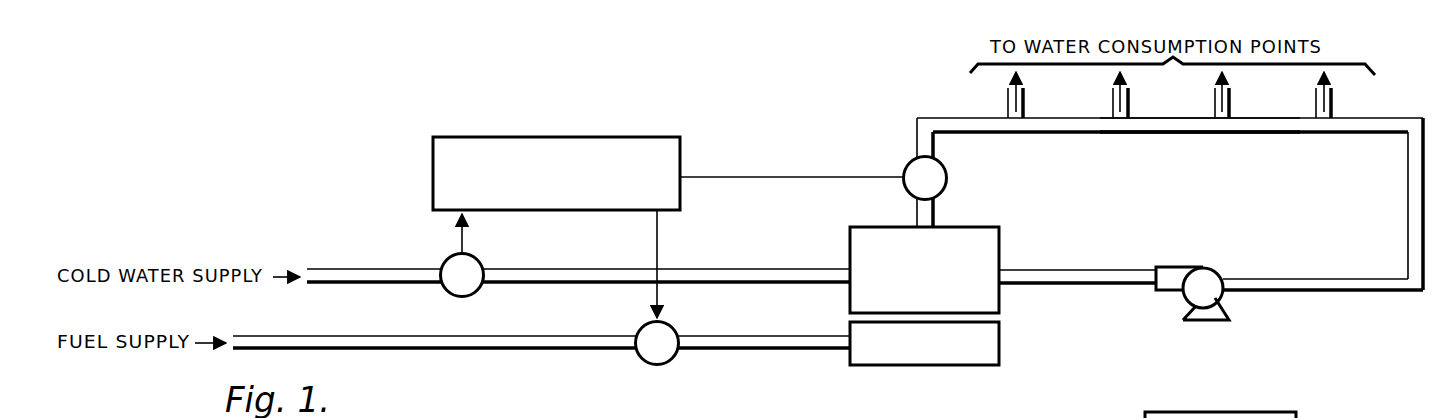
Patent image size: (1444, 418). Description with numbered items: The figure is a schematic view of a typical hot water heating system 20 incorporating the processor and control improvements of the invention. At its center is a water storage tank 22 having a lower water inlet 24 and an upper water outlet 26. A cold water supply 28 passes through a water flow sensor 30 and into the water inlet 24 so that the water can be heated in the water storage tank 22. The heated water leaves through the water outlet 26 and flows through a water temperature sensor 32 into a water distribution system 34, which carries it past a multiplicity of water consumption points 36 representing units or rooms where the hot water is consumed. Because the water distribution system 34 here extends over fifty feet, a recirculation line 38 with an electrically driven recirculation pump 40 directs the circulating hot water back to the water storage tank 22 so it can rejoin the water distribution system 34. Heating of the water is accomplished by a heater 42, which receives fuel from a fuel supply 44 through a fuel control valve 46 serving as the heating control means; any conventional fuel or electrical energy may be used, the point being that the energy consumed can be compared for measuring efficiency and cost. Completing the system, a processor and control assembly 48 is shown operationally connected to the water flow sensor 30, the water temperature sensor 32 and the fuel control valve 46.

The hot water heating system 20 is at (910, 113).
The water storage tank 22 is at (855, 243).
The water inlet 24 is at (818, 275).
The water outlet 26 is at (920, 213).
The cold water supply 28 is at (342, 272).
The water flow sensor 30 is at (460, 265).
The water temperature sensor 32 is at (915, 168).
The water distribution system 34 is at (1196, 134).
The water consumption points 36 is at (1110, 98).
The recirculation line 38 is at (1383, 280).
The recirculation pump 40 is at (1213, 290).
The heater 42 is at (988, 347).
The fuel supply 44 is at (322, 338).
The fuel control valve 46 is at (655, 333).
The processor and control assembly 48 is at (465, 130).